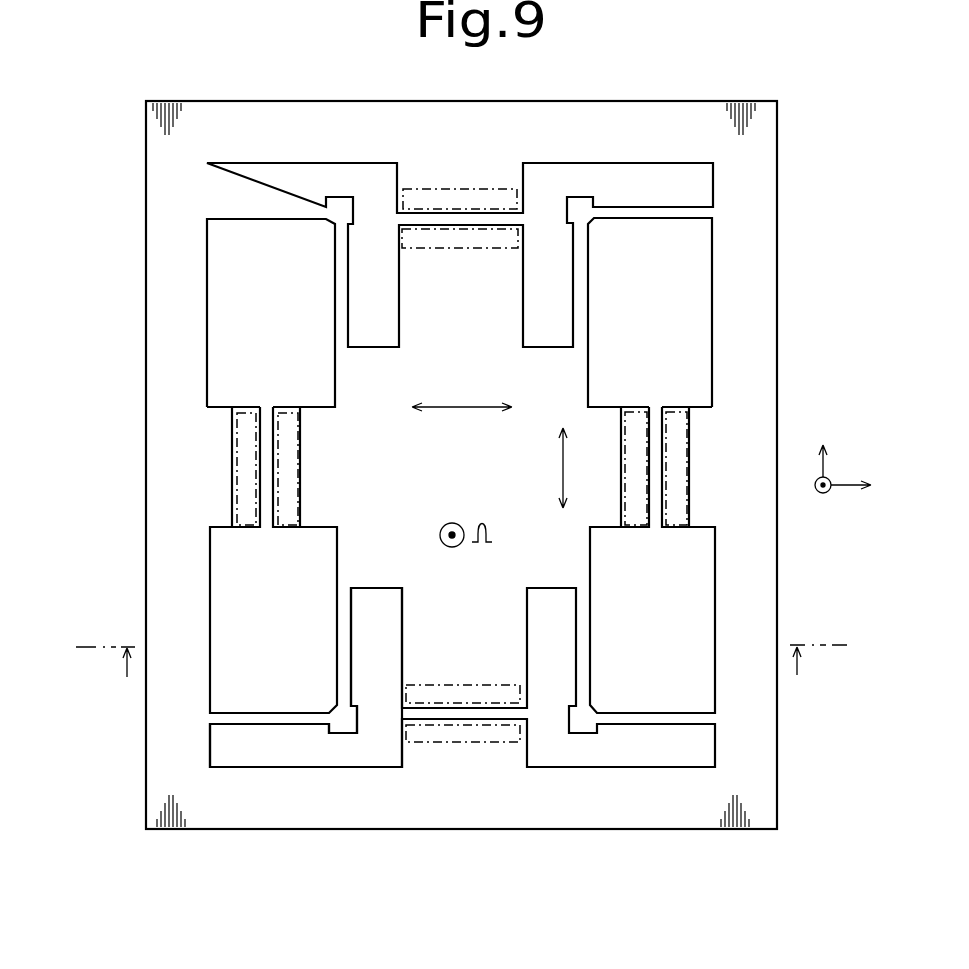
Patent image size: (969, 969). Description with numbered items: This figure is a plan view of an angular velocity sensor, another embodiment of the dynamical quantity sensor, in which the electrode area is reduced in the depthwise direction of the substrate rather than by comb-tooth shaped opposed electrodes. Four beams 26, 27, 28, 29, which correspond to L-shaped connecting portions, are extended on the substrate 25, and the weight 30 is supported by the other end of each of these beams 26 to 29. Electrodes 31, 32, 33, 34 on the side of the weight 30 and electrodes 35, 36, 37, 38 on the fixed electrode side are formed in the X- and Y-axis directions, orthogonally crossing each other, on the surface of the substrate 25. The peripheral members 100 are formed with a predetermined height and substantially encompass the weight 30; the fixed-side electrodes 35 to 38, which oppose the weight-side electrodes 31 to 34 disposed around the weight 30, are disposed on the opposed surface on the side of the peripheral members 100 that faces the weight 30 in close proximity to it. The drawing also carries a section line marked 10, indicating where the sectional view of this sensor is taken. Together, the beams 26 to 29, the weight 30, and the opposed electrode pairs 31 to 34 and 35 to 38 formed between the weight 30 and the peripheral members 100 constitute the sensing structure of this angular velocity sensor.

The peripheral members 100 is at (484, 447).
The substrate 25 is at (770, 777).
The beam 26 is at (268, 220).
The beam 27 is at (338, 682).
The beam 28 is at (588, 274).
The beam 29 is at (591, 623).
The weight 30 is at (340, 562).
The electrode on the side of the weight 31 is at (300, 475).
The electrode on the side of the weight 32 is at (625, 480).
The electrode on the side of the weight 33 is at (462, 250).
The electrode on the side of the weight 34 is at (440, 685).
The electrode on the fixed electrode side 35 is at (237, 472).
The electrode on the fixed electrode side 36 is at (688, 467).
The electrode on the fixed electrode side 37 is at (495, 188).
The electrode on the fixed electrode side 38 is at (461, 745).
The section line 10 is at (461, 664).